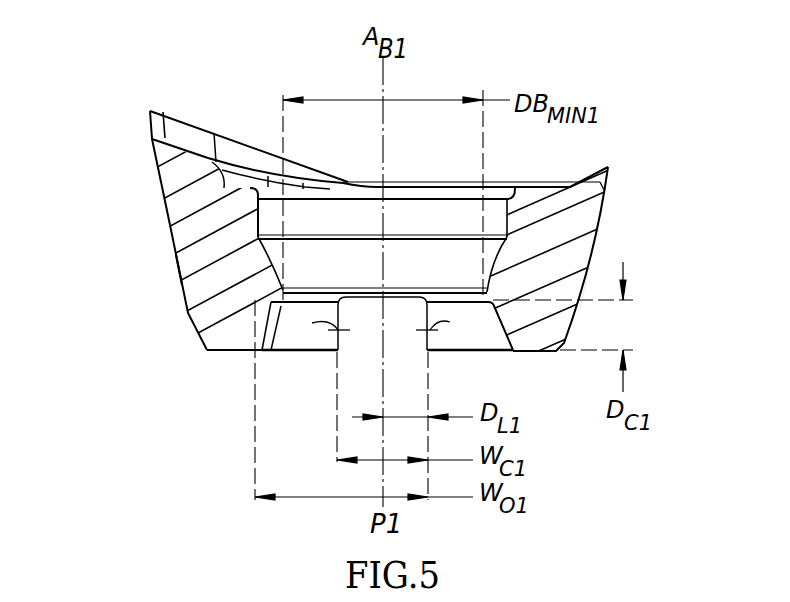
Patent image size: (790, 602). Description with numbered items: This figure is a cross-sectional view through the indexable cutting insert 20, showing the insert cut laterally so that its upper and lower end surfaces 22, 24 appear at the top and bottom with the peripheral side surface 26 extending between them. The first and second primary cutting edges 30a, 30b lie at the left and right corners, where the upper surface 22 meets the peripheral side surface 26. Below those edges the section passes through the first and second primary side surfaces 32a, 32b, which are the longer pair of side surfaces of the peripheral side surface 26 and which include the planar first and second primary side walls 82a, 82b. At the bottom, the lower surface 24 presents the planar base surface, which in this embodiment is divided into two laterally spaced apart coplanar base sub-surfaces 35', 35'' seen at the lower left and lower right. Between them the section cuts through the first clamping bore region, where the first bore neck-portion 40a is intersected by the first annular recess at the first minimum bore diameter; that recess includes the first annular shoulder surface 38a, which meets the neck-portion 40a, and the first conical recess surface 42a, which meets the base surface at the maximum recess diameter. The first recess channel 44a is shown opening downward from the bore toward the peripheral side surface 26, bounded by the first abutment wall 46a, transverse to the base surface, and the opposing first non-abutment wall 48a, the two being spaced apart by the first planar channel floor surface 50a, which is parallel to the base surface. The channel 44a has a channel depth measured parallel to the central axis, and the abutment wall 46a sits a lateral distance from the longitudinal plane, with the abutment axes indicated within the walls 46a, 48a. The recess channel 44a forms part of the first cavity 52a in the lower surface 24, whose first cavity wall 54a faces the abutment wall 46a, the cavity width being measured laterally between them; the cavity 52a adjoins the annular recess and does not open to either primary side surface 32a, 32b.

The indexable cutting insert 20 is at (191, 85).
The upper end surface 22 is at (236, 140).
The first primary cutting edge 30a is at (148, 121).
The peripheral side surface 26 is at (136, 206).
The first primary side surface 32a is at (148, 245).
The first primary side wall 82a is at (173, 272).
The lower end surface 24 is at (208, 364).
The first base sub-surface 35' is at (199, 409).
The first cavity wall 54a is at (262, 352).
The first cavity 52a is at (312, 350).
The first recess channel 44a is at (360, 348).
The first non-abutment wall 48a is at (347, 303).
The first abutment wall 46a is at (425, 305).
The first planar channel floor surface 50a is at (393, 303).
The first annular shoulder surface 38a is at (495, 318).
The first conical recess surface 42a is at (513, 352).
The second base sub-surface 35'' is at (567, 411).
The first bore neck-portion 40a is at (474, 274).
The second primary cutting edge 30b is at (608, 167).
The second primary side wall 82b is at (600, 222).
The second primary side surface 32b is at (614, 251).